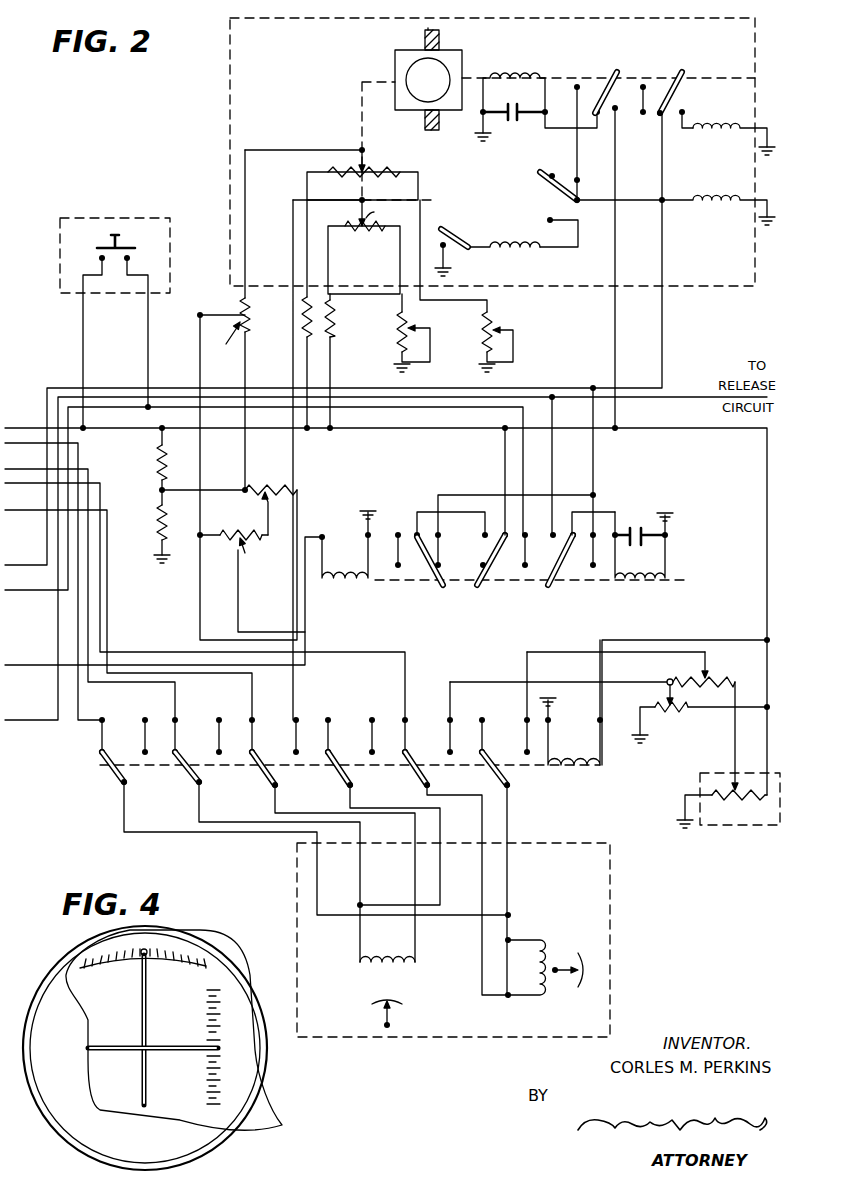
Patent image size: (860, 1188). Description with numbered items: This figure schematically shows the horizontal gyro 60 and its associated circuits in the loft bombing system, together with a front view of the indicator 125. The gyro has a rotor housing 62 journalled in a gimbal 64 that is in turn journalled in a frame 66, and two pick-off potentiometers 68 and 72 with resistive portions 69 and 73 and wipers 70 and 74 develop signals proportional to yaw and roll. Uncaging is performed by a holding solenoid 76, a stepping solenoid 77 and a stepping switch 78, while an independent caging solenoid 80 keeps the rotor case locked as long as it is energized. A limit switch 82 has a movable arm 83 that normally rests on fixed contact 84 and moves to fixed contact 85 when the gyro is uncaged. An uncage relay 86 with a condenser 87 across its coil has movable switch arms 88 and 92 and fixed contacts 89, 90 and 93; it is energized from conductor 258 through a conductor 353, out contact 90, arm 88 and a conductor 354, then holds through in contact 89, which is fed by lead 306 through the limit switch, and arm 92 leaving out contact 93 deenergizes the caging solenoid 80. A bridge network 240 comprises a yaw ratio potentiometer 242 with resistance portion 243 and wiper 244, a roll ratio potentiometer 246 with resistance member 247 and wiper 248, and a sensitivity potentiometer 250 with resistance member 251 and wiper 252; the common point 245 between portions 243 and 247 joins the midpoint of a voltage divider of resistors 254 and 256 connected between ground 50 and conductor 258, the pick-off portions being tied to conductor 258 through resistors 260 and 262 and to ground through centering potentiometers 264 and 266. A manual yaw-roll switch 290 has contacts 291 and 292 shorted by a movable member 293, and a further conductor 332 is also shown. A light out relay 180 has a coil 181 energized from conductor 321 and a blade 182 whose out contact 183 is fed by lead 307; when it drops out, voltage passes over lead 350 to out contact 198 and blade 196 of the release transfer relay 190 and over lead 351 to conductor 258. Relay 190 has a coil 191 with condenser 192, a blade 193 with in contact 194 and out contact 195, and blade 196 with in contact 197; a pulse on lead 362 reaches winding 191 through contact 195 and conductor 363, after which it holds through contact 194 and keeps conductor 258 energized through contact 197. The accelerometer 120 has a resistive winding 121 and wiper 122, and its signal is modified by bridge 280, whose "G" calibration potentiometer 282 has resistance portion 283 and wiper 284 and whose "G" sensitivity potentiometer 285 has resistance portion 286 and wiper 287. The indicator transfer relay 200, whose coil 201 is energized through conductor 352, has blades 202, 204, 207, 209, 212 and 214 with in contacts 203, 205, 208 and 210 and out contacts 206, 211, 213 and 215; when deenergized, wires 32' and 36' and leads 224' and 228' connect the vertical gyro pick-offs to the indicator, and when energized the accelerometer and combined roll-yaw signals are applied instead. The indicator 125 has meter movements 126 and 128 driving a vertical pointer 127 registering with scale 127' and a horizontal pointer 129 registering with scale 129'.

In FIG. 2, the horizontal gyro 60 is at (259, 55).
In FIG. 2, the rotor housing 62 is at (439, 89).
In FIG. 2, the gimbal 64 is at (424, 40).
In FIG. 2, the frame 66 is at (440, 36).
In FIG. 2, the yaw pick-off potentiometer 68 is at (277, 188).
In FIG. 2, the resistive portion 69 is at (386, 172).
In FIG. 2, the wiper 70 is at (366, 150).
In FIG. 2, the roll pick-off potentiometer 72 is at (373, 290).
In FIG. 2, the resistive portion 73 is at (356, 222).
In FIG. 2, the wiper 74 is at (379, 210).
In FIG. 2, the holding solenoid 76 is at (706, 196).
In FIG. 2, the stepping solenoid 77 is at (492, 244).
In FIG. 2, the stepping switch 78 is at (442, 230).
In FIG. 2, the caging solenoid 80 is at (712, 124).
In FIG. 2, the limit switch 82 is at (530, 174).
In FIG. 2, the movable arm 83 is at (562, 190).
In FIG. 2, the fixed contact 84 is at (548, 220).
In FIG. 2, the fixed contact 85 is at (552, 174).
In FIG. 2, the uncage relay 86 is at (516, 84).
In FIG. 2, the condenser 87 is at (513, 118).
In FIG. 2, the movable switch arm 88 is at (612, 78).
In FIG. 2, the fixed in contact 89 is at (577, 85).
In FIG. 2, the out contact 90 is at (620, 78).
In FIG. 2, the movable switch arm 92 is at (684, 68).
In FIG. 2, the out contact 93 is at (686, 76).
In FIG. 2, the ground 50 is at (480, 140).
In FIG. 2, the conductor 354 is at (580, 130).
In FIG. 2, the conductor 353 is at (615, 236).
In FIG. 2, the manual yaw-roll switch 290 is at (96, 235).
In FIG. 2, the movable switch member 293 is at (121, 242).
In FIG. 2, the contact 292 is at (100, 265).
In FIG. 2, the contact 291 is at (128, 264).
In FIG. 2, the conductor 332 is at (430, 405).
In FIG. 2, the wiper 244 is at (230, 315).
In FIG. 2, the resistance portion 243 is at (250, 318).
In FIG. 2, the yaw ratio potentiometer 242 is at (225, 340).
In FIG. 2, the bridge network 240 is at (188, 360).
In FIG. 2, the resistor 260 is at (305, 336).
In FIG. 2, the resistor 262 is at (331, 312).
In FIG. 2, the roll centering potentiometer 264 is at (410, 330).
In FIG. 2, the yaw centering potentiometer 266 is at (496, 330).
In FIG. 2, the lead 306 is at (676, 340).
In FIG. 2, the lead 362 is at (690, 386).
In FIG. 2, the conductor 258 is at (646, 420).
In FIG. 2, the resistor 254 is at (158, 462).
In FIG. 2, the resistor 256 is at (158, 520).
In FIG. 2, the common connection 245 is at (242, 486).
In FIG. 2, the resistance member 247 is at (268, 488).
In FIG. 2, the wiper 248 is at (249, 513).
In FIG. 2, the roll ratio potentiometer 246 is at (274, 500).
In FIG. 2, the resistance member 251 is at (232, 533).
In FIG. 2, the sensitivity adjustment potentiometer 250 is at (248, 548).
In FIG. 2, the wiper 252 is at (238, 574).
In FIG. 2, the conductor 321 is at (306, 594).
In FIG. 2, the coil 181 is at (330, 576).
In FIG. 2, the light out relay 180 is at (376, 621).
In FIG. 2, the movable contact blade 182 is at (428, 580).
In FIG. 2, the out contact 183 is at (440, 566).
In FIG. 2, the lead 350 is at (440, 512).
In FIG. 2, the movable contact blade 196 is at (496, 572).
In FIG. 2, the out contact 198 is at (478, 584).
In FIG. 2, the out contact 195 is at (528, 568).
In FIG. 2, the in contact 197 is at (540, 580).
In FIG. 2, the movable contact blade 193 is at (570, 574).
In FIG. 2, the in contact 194 is at (594, 580).
In FIG. 2, the condenser 192 is at (616, 534).
In FIG. 2, the coil 191 is at (620, 578).
In FIG. 2, the release transfer relay 190 is at (676, 637).
In FIG. 2, the lead 351 is at (500, 470).
In FIG. 2, the lead 307 is at (588, 466).
In FIG. 2, the conductor 363 is at (598, 510).
In FIG. 2, the conductor 352 is at (728, 640).
In FIG. 2, the "G" sensitivity potentiometer 285 is at (712, 662).
In FIG. 2, the resistance portion 286 is at (730, 678).
In FIG. 2, the wiper 287 is at (700, 668).
In FIG. 2, the "G" calibration potentiometer 282 is at (658, 700).
In FIG. 2, the wiper 284 is at (676, 703).
In FIG. 2, the resistance portion 283 is at (705, 719).
In FIG. 2, the bridge 280 is at (724, 745).
In FIG. 2, the wiper member 122 is at (730, 762).
In FIG. 2, the resistive winding 121 is at (722, 800).
In FIG. 2, the accelerometer 120 is at (750, 845).
In FIG. 2, the lead 228' is at (354, 601).
In FIG. 2, the lead 224' is at (150, 615).
In FIG. 2, the wire 36' is at (60, 581).
In FIG. 2, the wire 32' is at (106, 587).
In FIG. 2, the out contact 215 is at (98, 745).
In FIG. 2, the movable contact blade 214 is at (108, 762).
In FIG. 2, the out contact 213 is at (172, 745).
In FIG. 2, the movable contact blade 212 is at (180, 762).
In FIG. 2, the out contact 211 is at (254, 745).
In FIG. 2, the movable contact blade 209 is at (260, 762).
In FIG. 2, the in contact 210 is at (312, 736).
In FIG. 2, the in contact 208 is at (350, 740).
In FIG. 2, the movable contact blade 207 is at (374, 830).
In FIG. 2, the out contact 206 is at (406, 750).
In FIG. 2, the movable contact blade 204 is at (416, 762).
In FIG. 2, the in contact 205 is at (446, 750).
In FIG. 2, the in contact 203 is at (526, 750).
In FIG. 2, the movable contact blade 202 is at (492, 764).
In FIG. 2, the coil 201 is at (558, 756).
In FIG. 2, the indicator transfer relay 200 is at (586, 825).
In FIG. 2, the meter movement 126 is at (360, 966).
In FIG. 2, the indicator 125 is at (344, 1017).
In FIG. 4, the indicator 125 is at (252, 1110).
In FIG. 2, the meter movement 128 is at (540, 938).
In FIG. 2, the pointer 127 is at (409, 1003).
In FIG. 4, the pointer 127 is at (144, 1019).
In FIG. 2, the scale 127' is at (421, 990).
In FIG. 4, the scale 127' is at (157, 939).
In FIG. 2, the pointer 129 is at (577, 983).
In FIG. 4, the pointer 129 is at (153, 1049).
In FIG. 2, the scale 129' is at (589, 937).
In FIG. 4, the scale 129' is at (251, 1042).